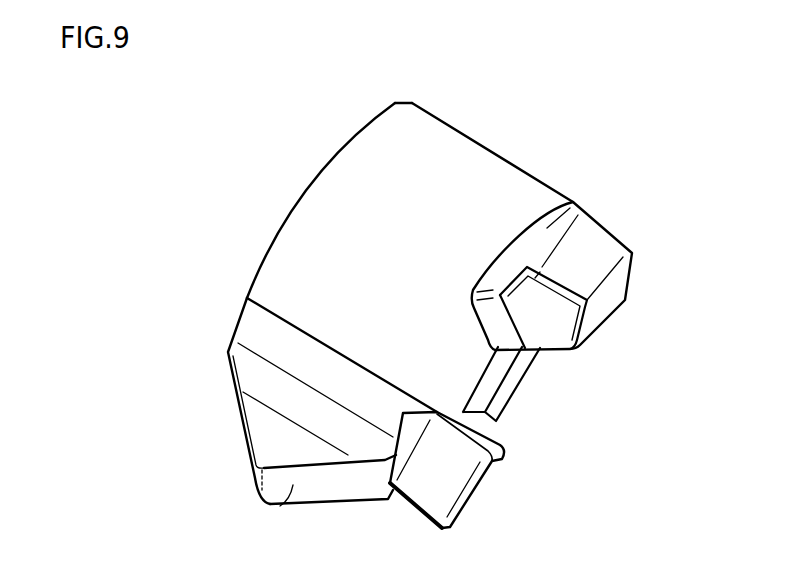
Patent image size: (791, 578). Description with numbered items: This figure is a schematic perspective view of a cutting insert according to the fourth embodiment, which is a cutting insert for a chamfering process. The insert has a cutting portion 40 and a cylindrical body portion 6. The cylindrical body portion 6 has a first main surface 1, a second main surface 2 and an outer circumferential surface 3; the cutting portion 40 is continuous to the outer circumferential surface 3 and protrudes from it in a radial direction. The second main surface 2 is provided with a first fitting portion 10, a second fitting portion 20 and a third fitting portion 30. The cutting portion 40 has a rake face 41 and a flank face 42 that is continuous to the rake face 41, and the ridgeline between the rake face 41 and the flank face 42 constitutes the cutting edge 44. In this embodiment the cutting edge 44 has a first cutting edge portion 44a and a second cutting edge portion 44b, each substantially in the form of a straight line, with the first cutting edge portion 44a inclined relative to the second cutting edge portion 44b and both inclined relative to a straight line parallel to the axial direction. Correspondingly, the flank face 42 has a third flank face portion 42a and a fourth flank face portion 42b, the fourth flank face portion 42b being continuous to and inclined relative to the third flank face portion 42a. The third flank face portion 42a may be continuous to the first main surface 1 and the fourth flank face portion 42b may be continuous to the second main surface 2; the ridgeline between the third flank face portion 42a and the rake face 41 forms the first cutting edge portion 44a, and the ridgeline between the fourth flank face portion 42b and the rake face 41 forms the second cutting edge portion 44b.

The cylindrical body portion 6 is at (585, 70).
The first main surface 1 is at (338, 148).
The second main surface 2 is at (575, 200).
The outer circumferential surface 3 is at (443, 173).
The first fitting portion 10 is at (477, 485).
The second fitting portion 20 is at (495, 382).
The third fitting portion 30 is at (600, 307).
The cutting portion 40 is at (121, 393).
The rake face 41 is at (280, 443).
The flank face 42 is at (162, 485).
The third flank face portion 42a is at (257, 490).
The fourth flank face portion 42b is at (277, 507).
The cutting edge 44 is at (162, 420).
The first cutting edge portion 44a is at (280, 468).
The second cutting edge portion 44b is at (267, 480).